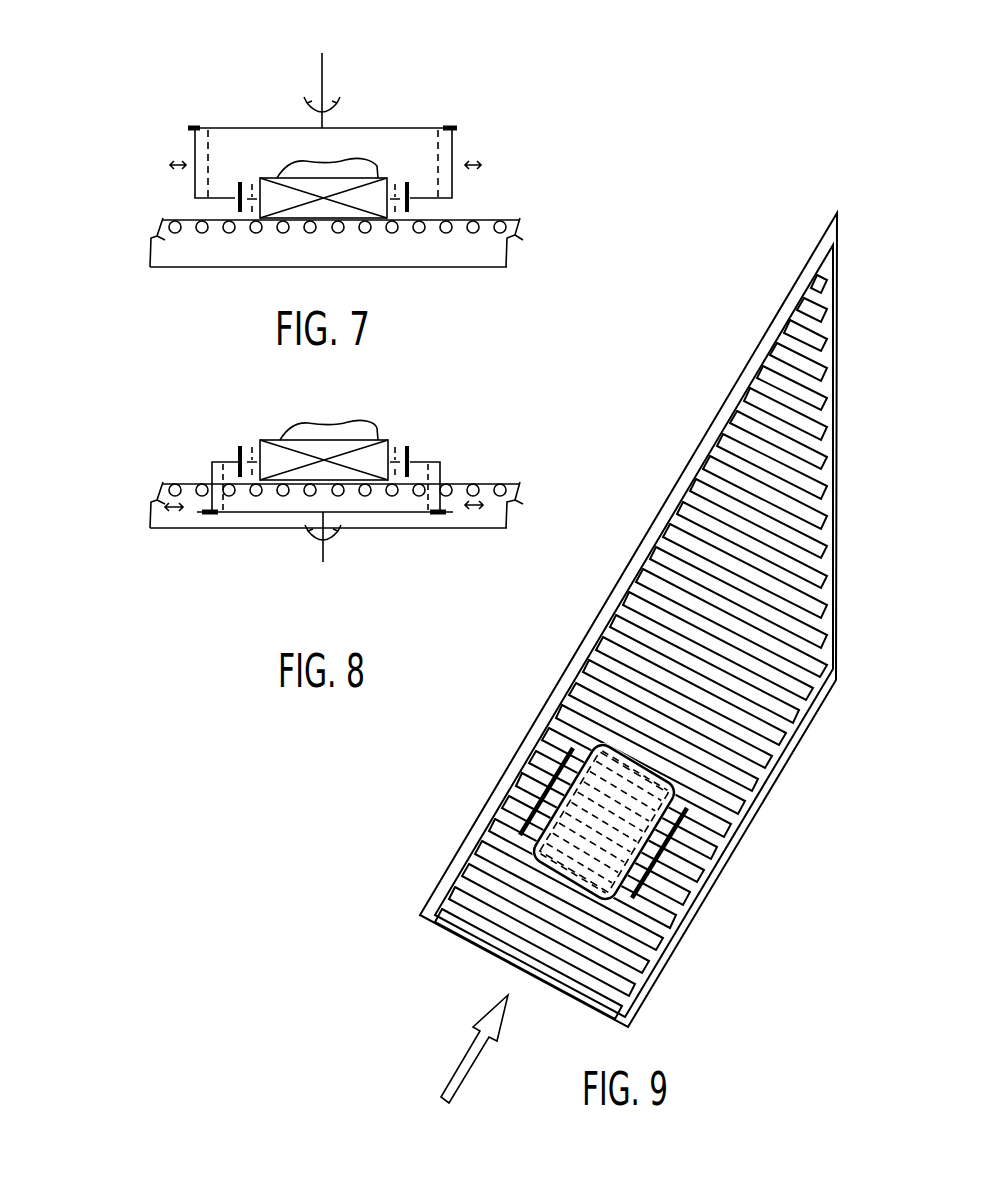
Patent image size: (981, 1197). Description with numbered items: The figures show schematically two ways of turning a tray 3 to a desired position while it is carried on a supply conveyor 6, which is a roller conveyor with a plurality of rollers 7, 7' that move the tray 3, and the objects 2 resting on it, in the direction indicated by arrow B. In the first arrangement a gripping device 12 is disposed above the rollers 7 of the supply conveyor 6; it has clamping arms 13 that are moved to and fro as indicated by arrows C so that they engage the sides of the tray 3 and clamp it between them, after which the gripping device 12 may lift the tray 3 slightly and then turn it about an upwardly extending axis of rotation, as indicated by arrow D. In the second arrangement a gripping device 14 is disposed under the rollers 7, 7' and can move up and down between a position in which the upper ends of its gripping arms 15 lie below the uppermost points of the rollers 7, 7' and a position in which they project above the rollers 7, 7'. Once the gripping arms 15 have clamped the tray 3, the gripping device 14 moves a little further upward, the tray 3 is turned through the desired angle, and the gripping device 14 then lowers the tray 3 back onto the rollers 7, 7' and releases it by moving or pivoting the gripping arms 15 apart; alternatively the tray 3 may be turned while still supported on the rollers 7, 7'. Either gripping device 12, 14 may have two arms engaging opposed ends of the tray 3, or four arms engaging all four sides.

In FIG. 7, the object 2 is at (356, 161).
In FIG. 8, the object 2 is at (344, 421).
In FIG. 7, the tray 3 is at (378, 200).
In FIG. 8, the tray 3 is at (381, 444).
In FIG. 9, the tray 3 is at (536, 889).
In FIG. 7, the supply conveyor 6 is at (230, 277).
In FIG. 8, the supply conveyor 6 is at (417, 547).
In FIG. 9, the supply conveyor 6 is at (663, 460).
In FIG. 7, the roller 7 is at (359, 206).
In FIG. 8, the roller 7 is at (352, 469).
In FIG. 9, the roller 7 is at (649, 647).
In FIG. 9, the roller 7' is at (616, 809).
In FIG. 7, the gripping device 12 is at (287, 90).
In FIG. 7, the clamping arm 13 is at (195, 140).
In FIG. 8, the gripping device 14 is at (302, 558).
In FIG. 8, the gripping arm 15 is at (220, 461).
In FIG. 9, the gripping arm 15 is at (537, 810).
In FIG. 9, the arrow B is at (470, 1068).
In FIG. 7, the arrows C is at (163, 165).
In FIG. 8, the arrows C is at (190, 512).
In FIG. 7, the arrow D is at (340, 107).
In FIG. 8, the arrow D is at (337, 533).